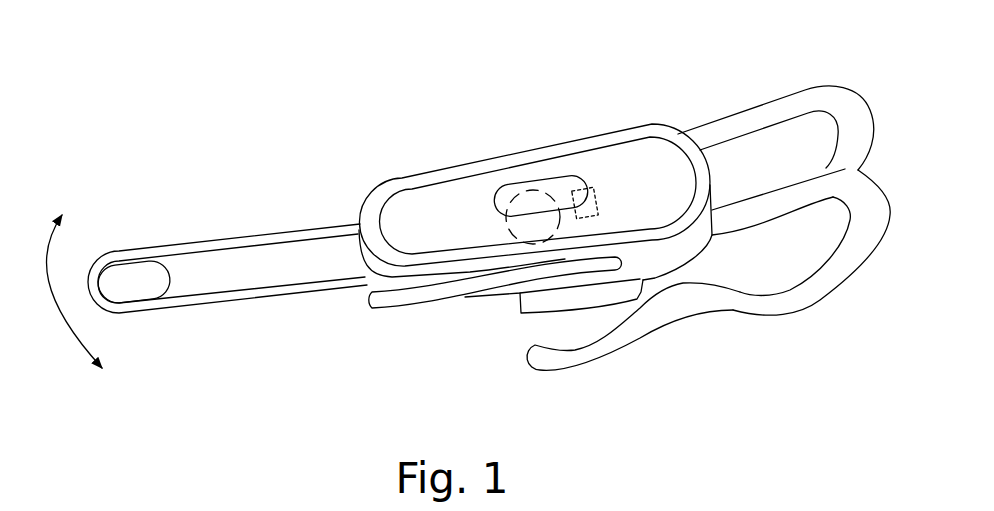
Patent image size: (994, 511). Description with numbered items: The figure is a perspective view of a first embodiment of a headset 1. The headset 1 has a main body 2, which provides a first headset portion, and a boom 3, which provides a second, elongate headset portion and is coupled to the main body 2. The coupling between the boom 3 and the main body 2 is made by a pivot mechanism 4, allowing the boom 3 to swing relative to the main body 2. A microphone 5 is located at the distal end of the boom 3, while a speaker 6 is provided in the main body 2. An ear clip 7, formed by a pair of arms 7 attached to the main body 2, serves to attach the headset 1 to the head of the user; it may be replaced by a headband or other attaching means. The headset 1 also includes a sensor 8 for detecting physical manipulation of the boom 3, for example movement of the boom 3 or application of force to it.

The headset 1 is at (336, 113).
The main body 2 is at (384, 189).
The boom 3 is at (205, 242).
The pivot mechanism 4 is at (508, 244).
The microphone 5 is at (133, 285).
The speaker 6 is at (528, 313).
The ear clip 7 is at (845, 280).
The sensor 8 is at (586, 190).